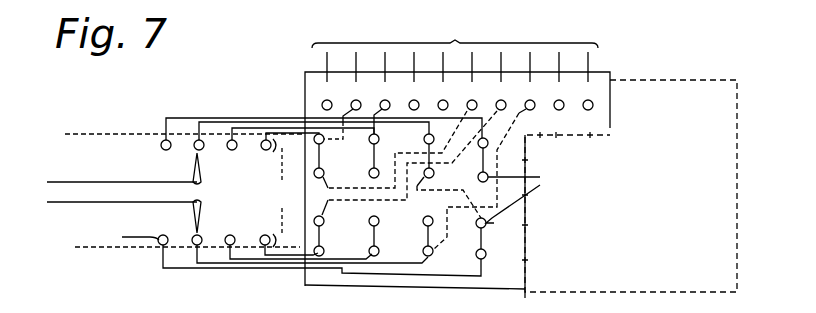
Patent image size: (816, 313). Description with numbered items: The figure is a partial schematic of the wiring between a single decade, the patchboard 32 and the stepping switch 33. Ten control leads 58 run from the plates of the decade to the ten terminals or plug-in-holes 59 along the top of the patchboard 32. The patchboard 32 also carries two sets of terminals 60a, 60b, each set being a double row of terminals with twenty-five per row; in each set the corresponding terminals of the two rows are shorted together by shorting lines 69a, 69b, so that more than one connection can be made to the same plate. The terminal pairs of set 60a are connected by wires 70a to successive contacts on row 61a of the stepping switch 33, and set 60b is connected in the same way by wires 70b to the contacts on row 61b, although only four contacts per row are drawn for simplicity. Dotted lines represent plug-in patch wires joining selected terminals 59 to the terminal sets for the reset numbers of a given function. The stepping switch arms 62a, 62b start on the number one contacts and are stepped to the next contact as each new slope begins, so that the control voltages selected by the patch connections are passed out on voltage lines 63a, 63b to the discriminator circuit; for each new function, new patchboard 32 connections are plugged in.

The patchboard 32 is at (706, 266).
The stepping switch 33 is at (259, 224).
The control leads 58 is at (596, 58).
The terminals or plug-in-holes 59 is at (322, 103).
The set of terminals 60a is at (502, 221).
The set of terminals 60b is at (510, 140).
The row of contacts 61a is at (289, 229).
The row of contacts 61b is at (289, 159).
The stepping switch arm 62a is at (192, 211).
The stepping switch arm 62b is at (192, 165).
The voltage line 63a is at (70, 207).
The voltage line 63b is at (75, 182).
The shorting lines 69a is at (420, 240).
The shorting lines 69b is at (366, 158).
The wires 70a is at (191, 269).
The wires 70b is at (261, 106).